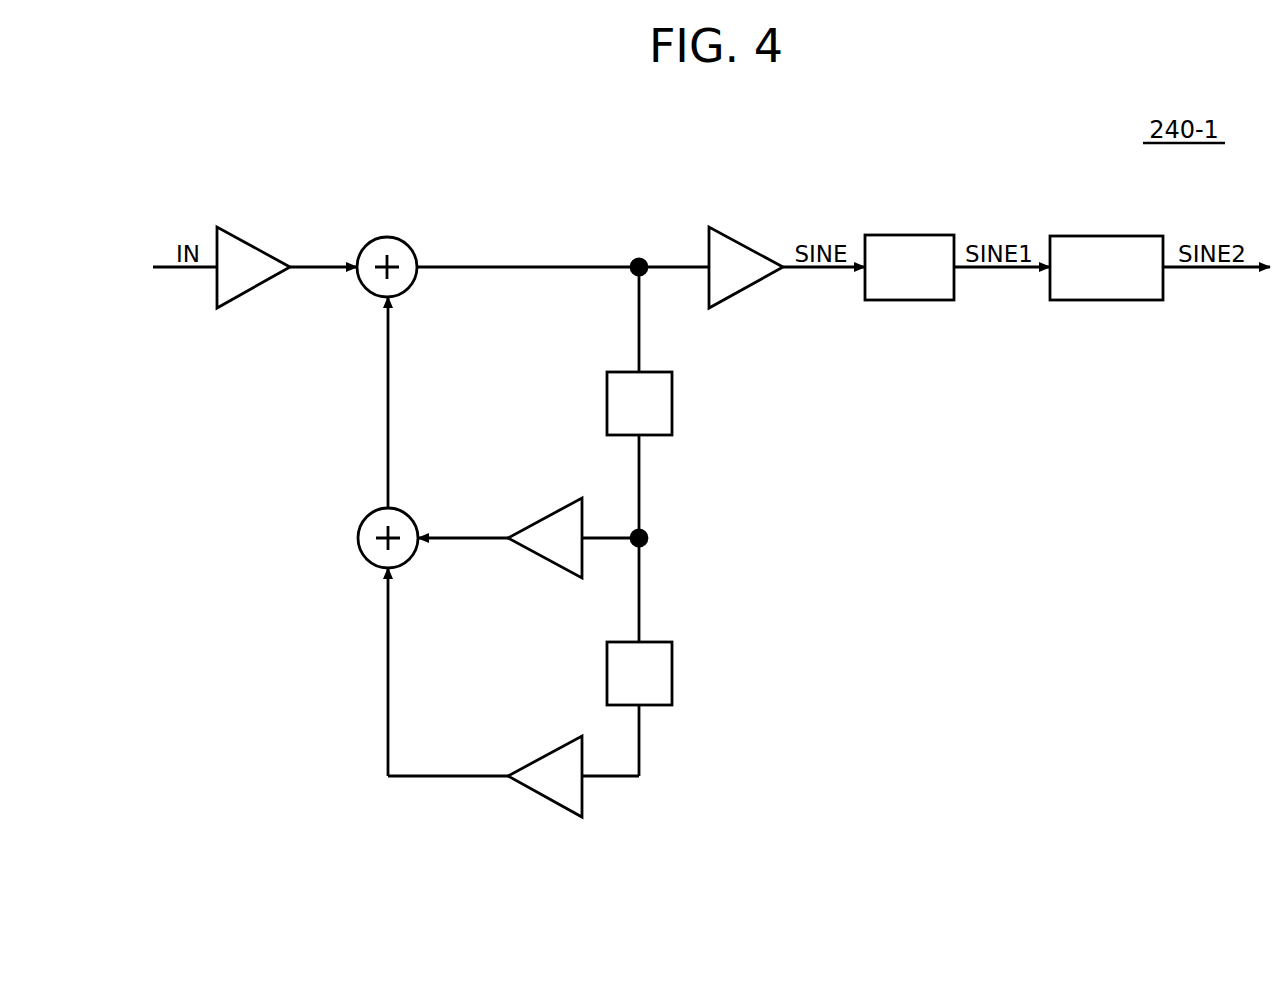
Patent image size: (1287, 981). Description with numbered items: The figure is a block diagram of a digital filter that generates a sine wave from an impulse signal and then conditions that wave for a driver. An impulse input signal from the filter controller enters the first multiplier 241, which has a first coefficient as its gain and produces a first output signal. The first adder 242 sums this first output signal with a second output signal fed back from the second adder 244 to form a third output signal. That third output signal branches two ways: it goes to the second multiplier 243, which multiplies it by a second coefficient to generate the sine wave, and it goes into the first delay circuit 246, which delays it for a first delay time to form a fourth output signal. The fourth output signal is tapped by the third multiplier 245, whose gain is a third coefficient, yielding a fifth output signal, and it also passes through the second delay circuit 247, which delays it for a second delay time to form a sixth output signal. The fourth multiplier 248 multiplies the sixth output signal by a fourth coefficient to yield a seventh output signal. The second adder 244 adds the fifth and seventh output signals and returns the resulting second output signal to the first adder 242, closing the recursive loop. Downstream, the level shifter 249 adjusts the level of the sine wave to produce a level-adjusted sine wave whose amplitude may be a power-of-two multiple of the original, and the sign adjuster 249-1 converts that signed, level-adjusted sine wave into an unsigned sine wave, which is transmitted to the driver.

The first multiplier 241 is at (257, 245).
The first adder 242 is at (407, 248).
The second multiplier 243 is at (748, 245).
The second adder 244 is at (408, 517).
The third multiplier 245 is at (544, 519).
The first delay circuit 246 is at (673, 402).
The second delay circuit 247 is at (673, 672).
The fourth multiplier 248 is at (544, 757).
The level shifter 249 is at (909, 235).
The sign adjuster 249-1 is at (1121, 236).